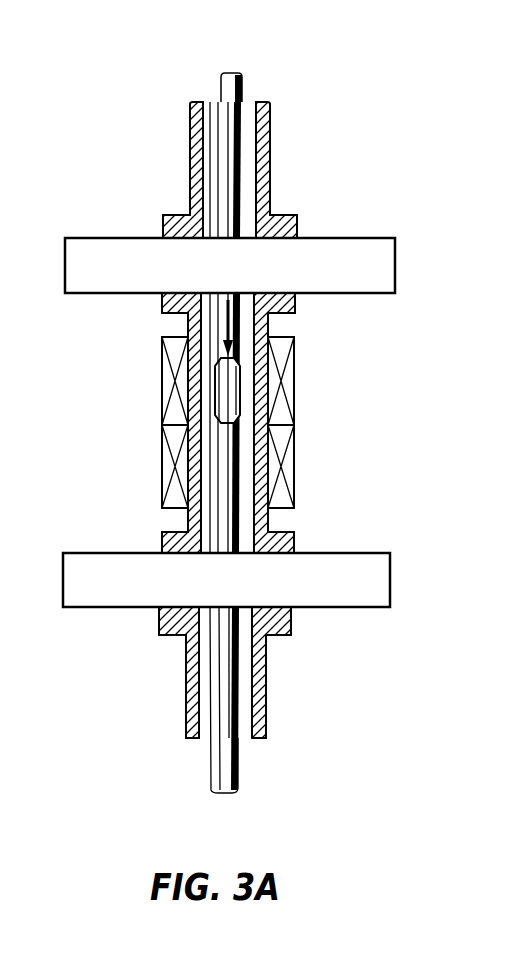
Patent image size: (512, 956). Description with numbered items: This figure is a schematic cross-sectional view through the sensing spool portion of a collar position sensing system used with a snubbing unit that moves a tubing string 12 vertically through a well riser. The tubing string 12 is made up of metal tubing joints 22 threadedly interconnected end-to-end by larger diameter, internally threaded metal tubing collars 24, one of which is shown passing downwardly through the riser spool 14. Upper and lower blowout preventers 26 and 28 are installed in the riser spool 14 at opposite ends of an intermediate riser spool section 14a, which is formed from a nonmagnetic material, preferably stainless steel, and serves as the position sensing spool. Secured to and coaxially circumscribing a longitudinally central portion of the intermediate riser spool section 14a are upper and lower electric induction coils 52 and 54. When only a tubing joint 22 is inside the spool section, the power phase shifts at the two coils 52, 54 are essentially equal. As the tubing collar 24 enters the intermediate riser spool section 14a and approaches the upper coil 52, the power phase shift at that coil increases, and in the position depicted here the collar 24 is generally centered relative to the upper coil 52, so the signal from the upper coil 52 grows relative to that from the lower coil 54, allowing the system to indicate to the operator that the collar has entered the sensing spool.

The tubing string 12 is at (253, 78).
The riser spool 14 is at (282, 145).
The intermediate riser spool section 14a is at (276, 519).
The tubing joint 22 is at (217, 134).
The tubing collar 24 is at (217, 399).
The upper blowout preventer 26 is at (396, 275).
The lower blowout preventer 28 is at (392, 583).
The upper electric induction coil 52 is at (295, 371).
The lower electric induction coil 54 is at (295, 463).